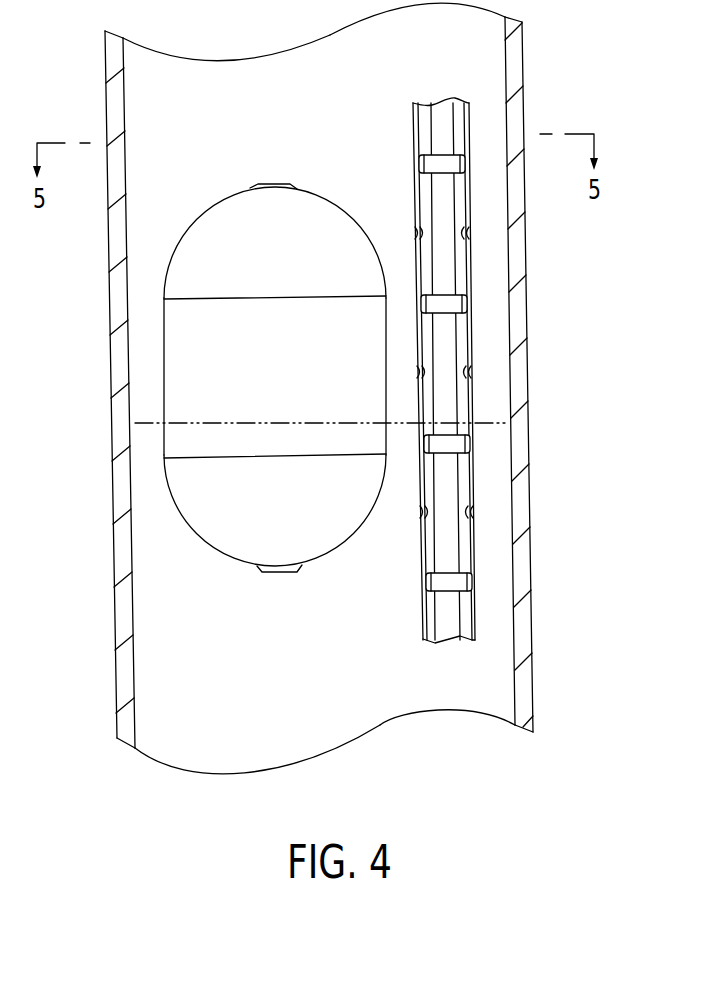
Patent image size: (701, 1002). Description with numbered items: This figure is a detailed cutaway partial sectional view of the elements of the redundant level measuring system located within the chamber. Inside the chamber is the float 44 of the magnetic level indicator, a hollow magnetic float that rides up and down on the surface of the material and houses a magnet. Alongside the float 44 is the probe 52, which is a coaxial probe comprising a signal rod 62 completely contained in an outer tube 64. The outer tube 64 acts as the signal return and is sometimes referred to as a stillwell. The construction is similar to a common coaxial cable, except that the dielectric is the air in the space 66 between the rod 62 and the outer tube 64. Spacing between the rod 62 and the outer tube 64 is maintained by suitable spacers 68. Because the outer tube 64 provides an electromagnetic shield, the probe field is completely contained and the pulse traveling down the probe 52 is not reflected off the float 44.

The float 44 is at (188, 229).
The probe 52 is at (474, 348).
The signal rod 62 is at (455, 263).
The outer tube 64 is at (468, 316).
The space 66 is at (468, 366).
The spacers 68 is at (462, 162).